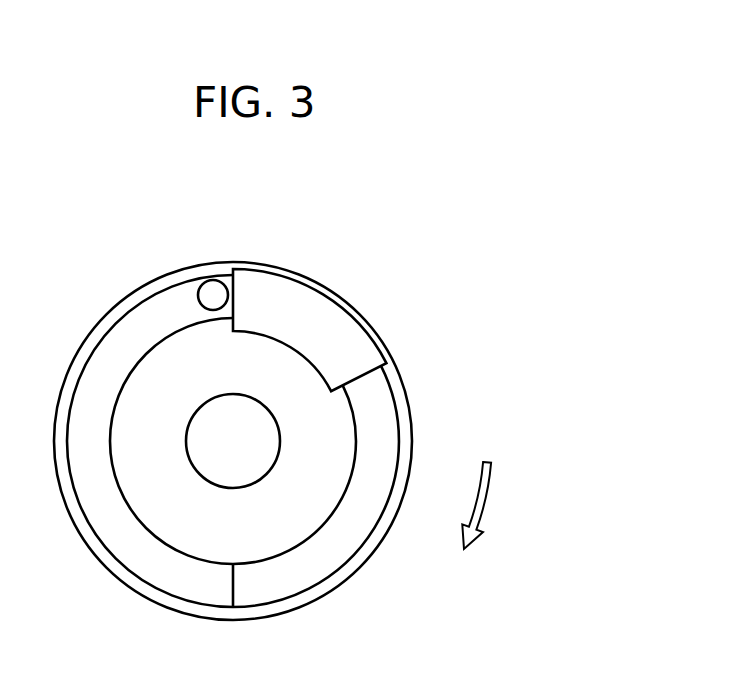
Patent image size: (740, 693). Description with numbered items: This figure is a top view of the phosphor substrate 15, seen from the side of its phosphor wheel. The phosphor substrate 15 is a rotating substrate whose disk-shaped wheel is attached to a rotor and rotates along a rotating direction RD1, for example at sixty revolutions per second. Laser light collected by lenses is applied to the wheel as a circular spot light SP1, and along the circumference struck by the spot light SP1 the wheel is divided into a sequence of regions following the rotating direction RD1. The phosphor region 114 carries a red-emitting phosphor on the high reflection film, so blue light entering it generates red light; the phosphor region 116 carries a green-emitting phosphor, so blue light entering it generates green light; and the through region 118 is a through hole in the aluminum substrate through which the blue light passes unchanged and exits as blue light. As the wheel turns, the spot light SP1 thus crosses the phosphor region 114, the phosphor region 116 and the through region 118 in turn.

The phosphor substrate 15 is at (462, 198).
The phosphor region 114 is at (122, 350).
The phosphor region 116 is at (348, 535).
The through region 118 is at (348, 350).
The spot light SP1 is at (210, 294).
The rotating direction RD1 is at (515, 505).